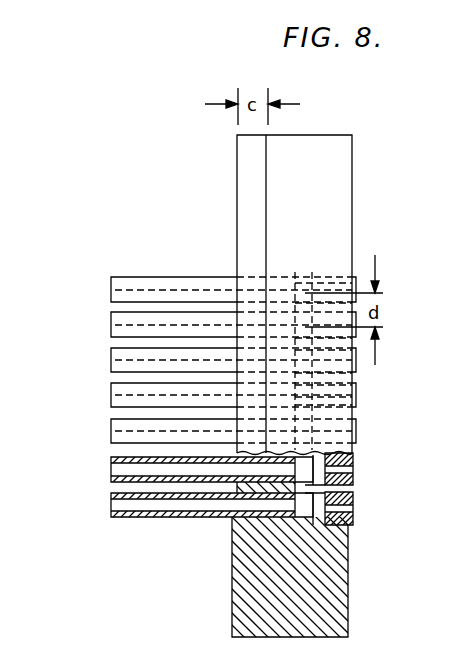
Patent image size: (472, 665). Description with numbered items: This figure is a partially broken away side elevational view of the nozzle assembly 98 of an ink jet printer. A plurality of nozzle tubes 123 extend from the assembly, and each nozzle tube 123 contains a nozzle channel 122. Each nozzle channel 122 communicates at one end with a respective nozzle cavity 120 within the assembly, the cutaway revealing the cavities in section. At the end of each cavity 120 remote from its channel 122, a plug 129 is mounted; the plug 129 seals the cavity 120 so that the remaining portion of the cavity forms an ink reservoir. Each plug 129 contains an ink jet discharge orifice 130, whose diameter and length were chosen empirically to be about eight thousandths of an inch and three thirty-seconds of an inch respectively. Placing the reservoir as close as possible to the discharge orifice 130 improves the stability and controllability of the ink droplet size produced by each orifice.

The nozzle assembly 98 is at (352, 216).
The nozzle cavity 120 is at (318, 512).
The nozzle channel 122 is at (190, 300).
The nozzle tube 123 is at (111, 386).
The plug 129 is at (354, 460).
The ink jet discharge orifice 130 is at (354, 508).